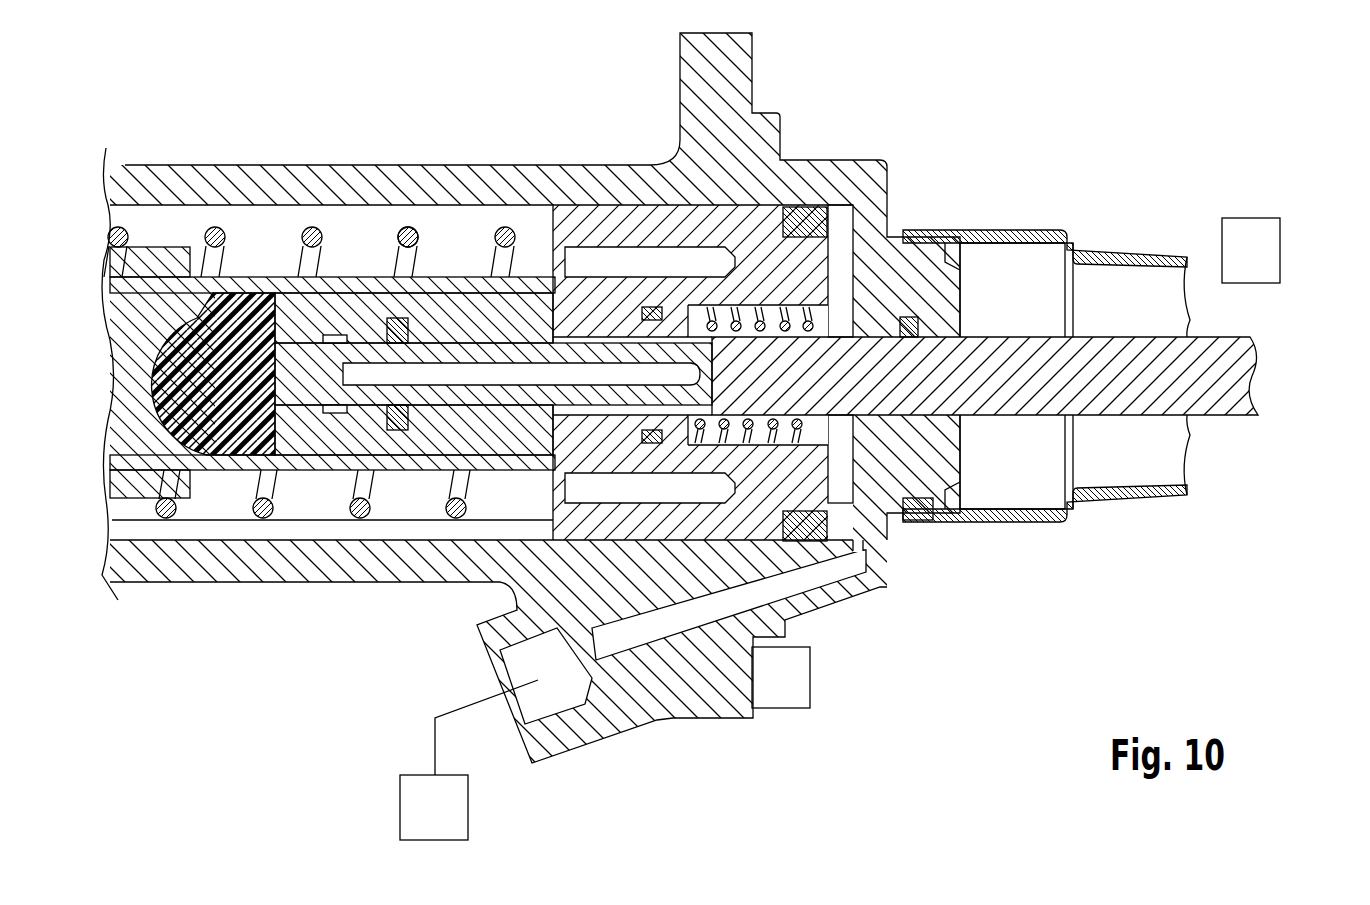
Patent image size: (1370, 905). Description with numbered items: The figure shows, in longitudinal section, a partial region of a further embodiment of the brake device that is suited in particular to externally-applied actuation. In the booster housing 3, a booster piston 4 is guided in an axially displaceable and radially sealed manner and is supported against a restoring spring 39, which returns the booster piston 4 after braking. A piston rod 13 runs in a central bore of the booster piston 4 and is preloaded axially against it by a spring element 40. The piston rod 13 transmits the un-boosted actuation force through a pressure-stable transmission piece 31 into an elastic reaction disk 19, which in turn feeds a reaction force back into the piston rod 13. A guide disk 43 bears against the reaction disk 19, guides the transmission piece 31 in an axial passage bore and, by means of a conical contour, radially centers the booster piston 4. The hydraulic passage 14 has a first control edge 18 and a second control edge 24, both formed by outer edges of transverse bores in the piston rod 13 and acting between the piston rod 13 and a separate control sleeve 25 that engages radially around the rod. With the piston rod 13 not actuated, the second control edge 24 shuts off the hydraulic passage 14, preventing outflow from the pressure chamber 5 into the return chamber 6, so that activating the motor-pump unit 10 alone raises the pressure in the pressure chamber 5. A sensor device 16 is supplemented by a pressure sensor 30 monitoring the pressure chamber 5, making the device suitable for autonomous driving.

The booster housing 3 is at (232, 190).
The booster piston 4 is at (757, 235).
The pressure chamber 5 is at (845, 232).
The return chamber 6 is at (357, 235).
The motor-pump unit 10 is at (468, 810).
The piston rod 13 is at (1003, 375).
The hydraulic passage 14 is at (622, 370).
The sensor device 16 is at (1280, 250).
The first control edge 18 is at (717, 337).
The reaction disk 19 is at (232, 393).
The second control edge 24 is at (565, 320).
The control sleeve 25 is at (548, 435).
The pressure sensor 30 is at (810, 677).
The transmission piece 31 is at (318, 365).
The restoring spring 39 is at (408, 235).
The spring element 40 is at (795, 240).
The guide disk 43 is at (297, 427).